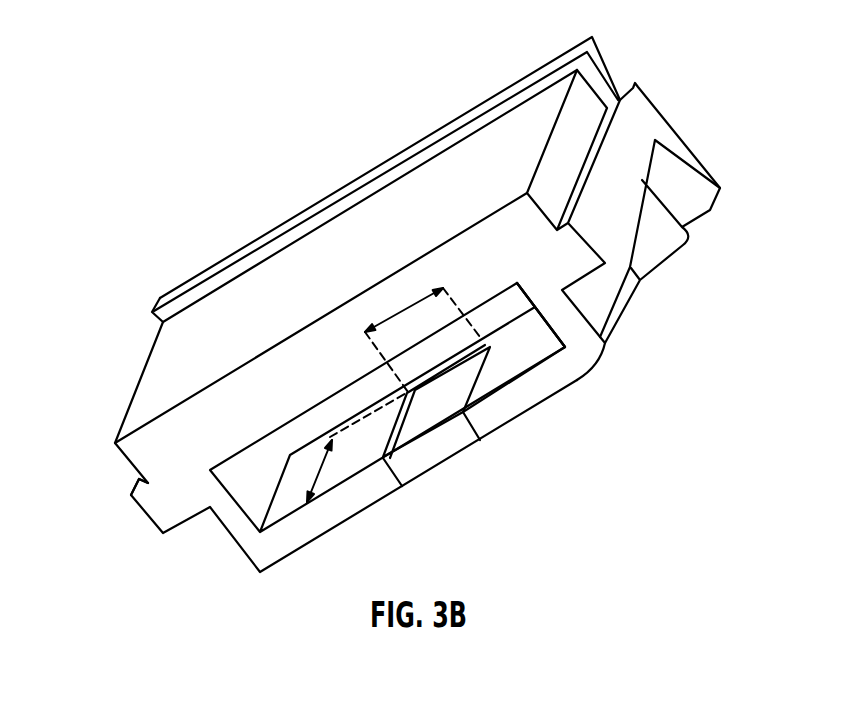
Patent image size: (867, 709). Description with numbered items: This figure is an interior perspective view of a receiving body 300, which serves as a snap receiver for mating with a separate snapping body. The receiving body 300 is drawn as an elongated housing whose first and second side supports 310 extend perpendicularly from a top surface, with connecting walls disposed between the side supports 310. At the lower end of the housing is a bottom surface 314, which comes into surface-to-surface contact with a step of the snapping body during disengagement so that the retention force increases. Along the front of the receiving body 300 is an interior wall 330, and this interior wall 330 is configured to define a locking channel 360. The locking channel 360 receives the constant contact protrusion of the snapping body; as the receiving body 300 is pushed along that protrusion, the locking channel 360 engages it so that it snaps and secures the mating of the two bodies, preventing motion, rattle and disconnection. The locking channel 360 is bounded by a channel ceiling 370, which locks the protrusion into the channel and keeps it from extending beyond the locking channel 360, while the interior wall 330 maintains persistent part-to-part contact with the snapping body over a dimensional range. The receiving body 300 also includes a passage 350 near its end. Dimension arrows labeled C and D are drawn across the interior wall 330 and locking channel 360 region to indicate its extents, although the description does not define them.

The receiving body 300 is at (272, 70).
The first and second side supports 310 is at (607, 213).
The bottom surface 314 is at (152, 503).
The interior wall 330 is at (343, 468).
The passage 350 is at (512, 360).
The locking channel 360 is at (423, 426).
The channel ceiling 370 is at (440, 378).
The dimension C is at (403, 313).
The dimension D is at (300, 447).